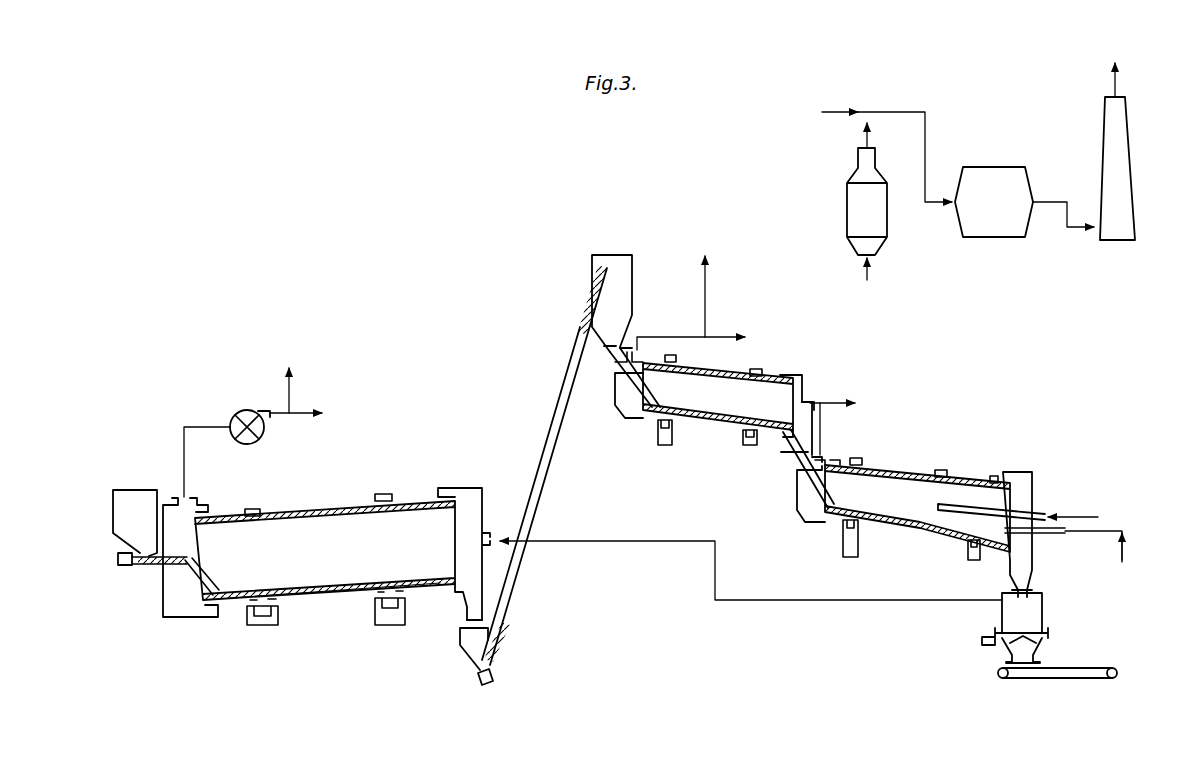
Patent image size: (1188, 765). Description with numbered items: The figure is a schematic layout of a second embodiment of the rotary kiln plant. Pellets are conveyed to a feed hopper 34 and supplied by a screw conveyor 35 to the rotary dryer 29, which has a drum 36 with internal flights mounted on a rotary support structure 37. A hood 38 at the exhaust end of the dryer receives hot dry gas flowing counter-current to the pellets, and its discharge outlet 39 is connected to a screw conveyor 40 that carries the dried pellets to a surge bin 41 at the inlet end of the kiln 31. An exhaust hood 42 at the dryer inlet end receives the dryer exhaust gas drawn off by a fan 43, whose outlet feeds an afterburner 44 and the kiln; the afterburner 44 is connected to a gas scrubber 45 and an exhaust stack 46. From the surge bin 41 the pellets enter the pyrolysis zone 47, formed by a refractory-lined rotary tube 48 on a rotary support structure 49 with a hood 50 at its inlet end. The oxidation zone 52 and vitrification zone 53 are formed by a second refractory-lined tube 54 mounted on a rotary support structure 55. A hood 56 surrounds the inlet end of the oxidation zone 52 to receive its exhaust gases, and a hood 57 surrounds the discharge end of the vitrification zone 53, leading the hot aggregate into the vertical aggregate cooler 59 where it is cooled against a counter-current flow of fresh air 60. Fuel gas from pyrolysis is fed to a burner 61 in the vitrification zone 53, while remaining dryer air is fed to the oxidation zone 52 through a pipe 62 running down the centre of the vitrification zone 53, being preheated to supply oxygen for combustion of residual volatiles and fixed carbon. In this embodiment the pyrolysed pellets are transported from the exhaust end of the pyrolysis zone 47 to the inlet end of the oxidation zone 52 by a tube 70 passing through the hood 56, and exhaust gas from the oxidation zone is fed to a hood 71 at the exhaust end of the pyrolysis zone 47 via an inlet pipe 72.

The rotary dryer 29 is at (346, 499).
The rotary kiln 31 is at (836, 622).
The feed hopper 34 is at (122, 510).
The screw conveyor 35 is at (148, 563).
The drum 36 is at (330, 600).
The rotary support structure 37 is at (395, 626).
The hood 38 is at (465, 488).
The discharge outlet 39 is at (470, 651).
The screw conveyor 40 is at (546, 480).
The surge bin 41 is at (625, 290).
The exhaust hood 42 is at (197, 505).
The fan 43 is at (246, 414).
The afterburner 44 is at (856, 215).
The gas scrubber 45 is at (990, 222).
The exhaust stack 46 is at (1118, 190).
The pyrolysis zone 47 is at (716, 398).
The rotary tube 48 is at (705, 362).
The rotary support structure 49 is at (752, 448).
The hood 50 is at (626, 410).
The oxidation zone 52 is at (850, 491).
The vitrification zone 53 is at (920, 491).
The second refractory-lined tube 54 is at (904, 523).
The rotary support structure 55 is at (848, 538).
The hood 56 is at (832, 461).
The hood 57 is at (1031, 481).
The aggregate cooler 59 is at (1002, 613).
The fresh air 60 is at (766, 601).
The burner 61 is at (705, 290).
The pipe 62 is at (968, 511).
The tube 70 is at (800, 472).
The hood 71 is at (798, 375).
The inlet pipe 72 is at (807, 399).